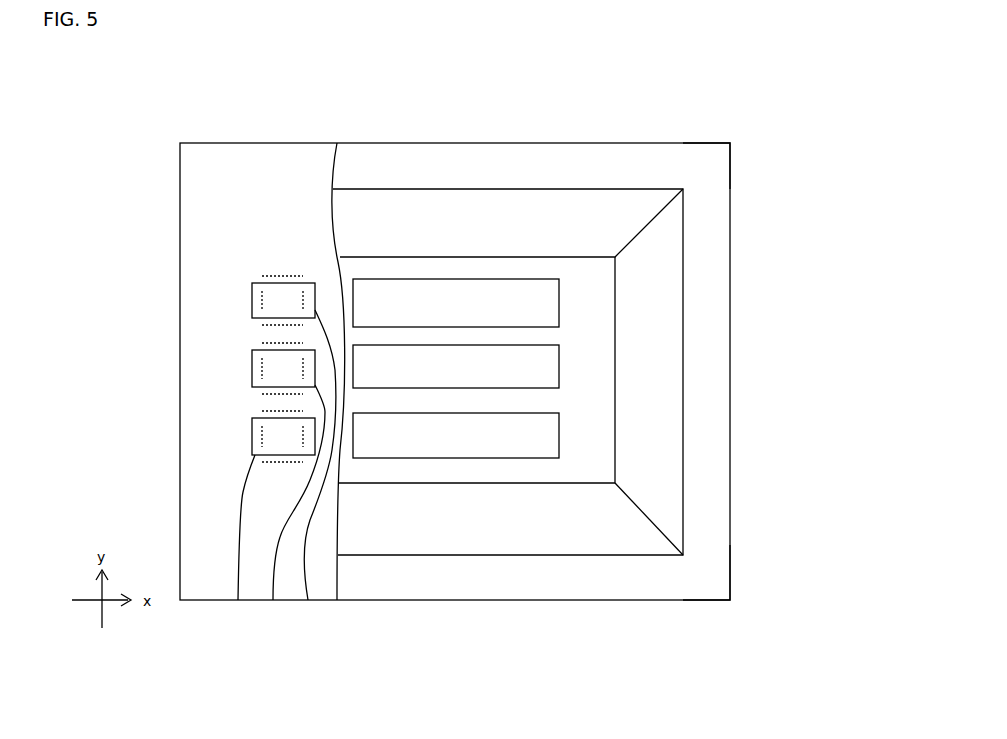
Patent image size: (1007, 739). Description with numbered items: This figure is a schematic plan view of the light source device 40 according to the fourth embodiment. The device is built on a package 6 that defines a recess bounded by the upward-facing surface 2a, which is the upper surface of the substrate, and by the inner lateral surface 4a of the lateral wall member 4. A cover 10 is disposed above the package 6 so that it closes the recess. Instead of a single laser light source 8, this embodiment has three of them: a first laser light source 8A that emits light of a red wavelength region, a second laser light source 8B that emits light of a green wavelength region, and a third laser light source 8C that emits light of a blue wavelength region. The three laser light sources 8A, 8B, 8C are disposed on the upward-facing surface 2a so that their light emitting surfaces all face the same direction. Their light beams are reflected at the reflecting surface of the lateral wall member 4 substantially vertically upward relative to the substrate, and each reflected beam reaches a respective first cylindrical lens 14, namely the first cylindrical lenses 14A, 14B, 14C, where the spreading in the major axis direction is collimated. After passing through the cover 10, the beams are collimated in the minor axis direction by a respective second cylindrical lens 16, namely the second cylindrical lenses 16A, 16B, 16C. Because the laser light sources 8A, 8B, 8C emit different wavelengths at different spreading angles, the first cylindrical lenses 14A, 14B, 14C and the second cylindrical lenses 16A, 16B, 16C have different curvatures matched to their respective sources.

The light source device 40 is at (690, 130).
The upward-facing surface 2a is at (578, 273).
The lateral wall member 4 is at (716, 158).
The inner lateral surface 4a is at (653, 490).
The package 6 is at (731, 545).
The laser light source 8 is at (598, 368).
The first laser light source 8A is at (540, 325).
The second laser light source 8B is at (540, 380).
The third laser light source 8C is at (540, 436).
The cover 10 is at (232, 196).
The first cylindrical lens 14 is at (182, 368).
The first cylindrical lens 14A is at (257, 323).
The first cylindrical lens 14B is at (257, 338).
The first cylindrical lens 14C is at (258, 406).
The second cylindrical lens 16 is at (278, 507).
The second cylindrical lens 16A is at (308, 600).
The second cylindrical lens 16B is at (273, 600).
The second cylindrical lens 16C is at (230, 558).